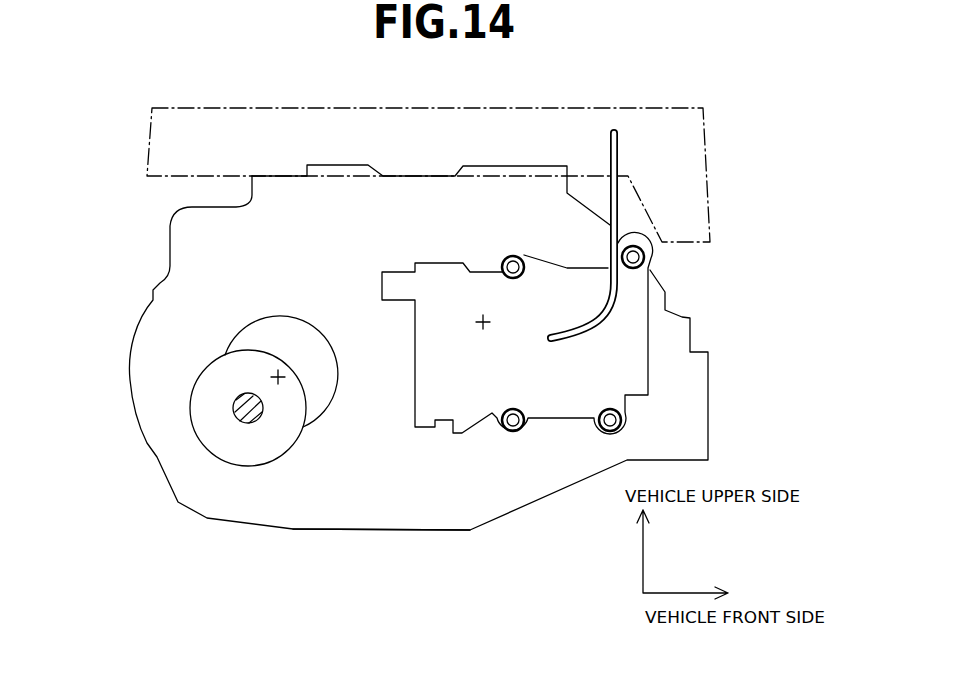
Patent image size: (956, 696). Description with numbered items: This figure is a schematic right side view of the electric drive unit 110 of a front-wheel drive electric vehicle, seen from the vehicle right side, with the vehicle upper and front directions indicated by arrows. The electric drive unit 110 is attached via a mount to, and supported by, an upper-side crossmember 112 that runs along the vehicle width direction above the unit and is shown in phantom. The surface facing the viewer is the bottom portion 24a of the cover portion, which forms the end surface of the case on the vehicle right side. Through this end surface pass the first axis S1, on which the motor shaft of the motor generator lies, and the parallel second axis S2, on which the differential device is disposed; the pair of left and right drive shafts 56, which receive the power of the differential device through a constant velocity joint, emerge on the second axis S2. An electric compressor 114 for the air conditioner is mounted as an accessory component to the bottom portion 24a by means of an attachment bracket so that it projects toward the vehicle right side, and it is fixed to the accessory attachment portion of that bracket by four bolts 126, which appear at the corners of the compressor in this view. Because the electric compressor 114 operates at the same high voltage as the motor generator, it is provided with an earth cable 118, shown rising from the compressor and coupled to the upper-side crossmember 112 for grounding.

The electric drive unit 110 is at (147, 237).
The upper-side crossmember 112 is at (343, 120).
The electric compressor 114 is at (607, 340).
The earth cable 118 is at (619, 162).
The bolts 126 is at (512, 255).
The drive shafts 56 is at (233, 407).
The bottom portion of the cover portion 24a is at (363, 492).
The first axis S1 is at (474, 312).
The second axis S2 is at (289, 367).